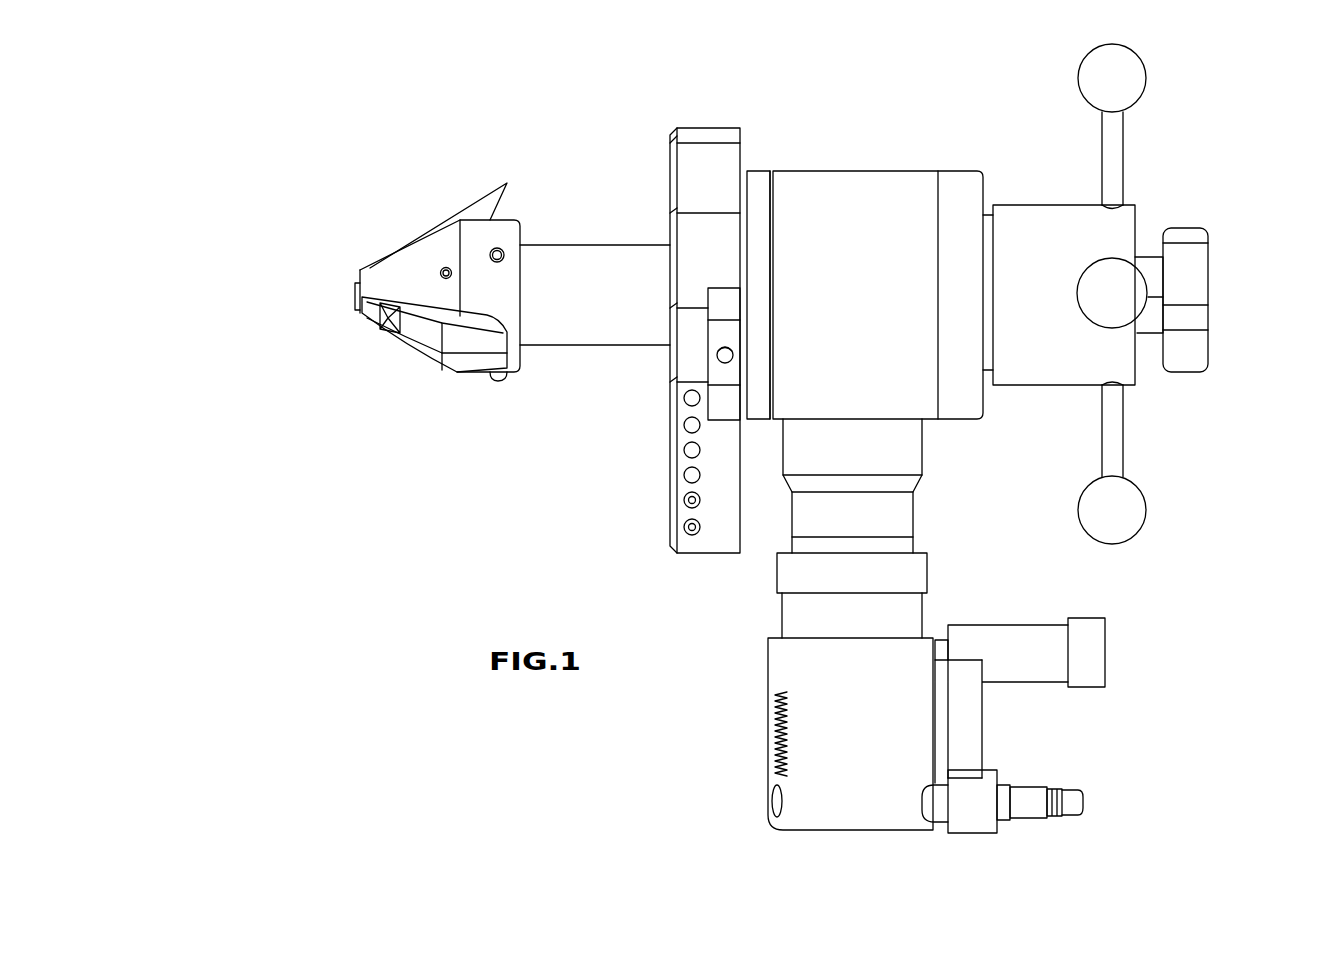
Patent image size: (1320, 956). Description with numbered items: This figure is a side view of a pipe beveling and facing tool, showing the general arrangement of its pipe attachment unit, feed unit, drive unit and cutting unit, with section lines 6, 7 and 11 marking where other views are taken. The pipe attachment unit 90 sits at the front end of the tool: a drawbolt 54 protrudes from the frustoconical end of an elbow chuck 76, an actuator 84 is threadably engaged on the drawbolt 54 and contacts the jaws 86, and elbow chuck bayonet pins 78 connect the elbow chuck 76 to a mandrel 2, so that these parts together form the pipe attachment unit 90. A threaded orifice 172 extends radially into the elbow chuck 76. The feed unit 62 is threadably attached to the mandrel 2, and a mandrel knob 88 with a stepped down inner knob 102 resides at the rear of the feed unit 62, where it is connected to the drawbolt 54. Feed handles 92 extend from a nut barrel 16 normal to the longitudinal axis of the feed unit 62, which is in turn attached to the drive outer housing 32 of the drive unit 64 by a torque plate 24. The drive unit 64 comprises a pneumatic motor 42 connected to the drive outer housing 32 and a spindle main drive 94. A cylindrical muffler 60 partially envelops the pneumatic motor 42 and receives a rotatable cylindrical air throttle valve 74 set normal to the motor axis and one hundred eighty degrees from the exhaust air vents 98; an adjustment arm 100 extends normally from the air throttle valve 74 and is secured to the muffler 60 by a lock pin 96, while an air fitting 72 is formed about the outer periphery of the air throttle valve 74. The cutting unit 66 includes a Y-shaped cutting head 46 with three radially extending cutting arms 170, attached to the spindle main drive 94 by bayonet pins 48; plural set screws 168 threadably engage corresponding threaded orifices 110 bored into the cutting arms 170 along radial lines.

The mandrel 2 is at (612, 250).
The section line 6- 6 is at (942, 119).
The section line 7- 7 is at (677, 89).
The section line 11- 11 is at (385, 89).
The nut barrel 16 is at (1055, 380).
The torque plate 24 is at (975, 187).
The drive outer housing 32 is at (825, 173).
The pneumatic motor 42 is at (907, 516).
The cutting head 46 is at (690, 132).
The bayonet pins 48 is at (718, 354).
The drawbolt 54 is at (355, 296).
The cylindrical muffler 60 is at (805, 818).
The feed unit 62 is at (1172, 418).
The drive unit 64 is at (903, 118).
The cutting unit 66 is at (635, 548).
The air fitting 72 is at (1030, 793).
The air throttle valve 74 is at (985, 828).
The elbow chuck 76 is at (397, 265).
The elbow chuck bayonet pins 78 is at (503, 248).
The actuator 84 is at (370, 315).
The jaws 86 is at (463, 347).
The mandrel knob 88 is at (1210, 275).
The pipe attachment unit 90 is at (463, 468).
The feed handles 92 is at (1148, 76).
The spindle main drive 94 is at (747, 247).
The lock pin 96 is at (938, 640).
The exhaust air vents 98 is at (768, 737).
The adjustment arm 100 is at (978, 708).
The inner knob 102 is at (1150, 262).
The threaded orifices 110 is at (684, 475).
The set screws 168 is at (684, 527).
The cutting arms 170 is at (675, 427).
The threaded orifice 172 is at (445, 268).